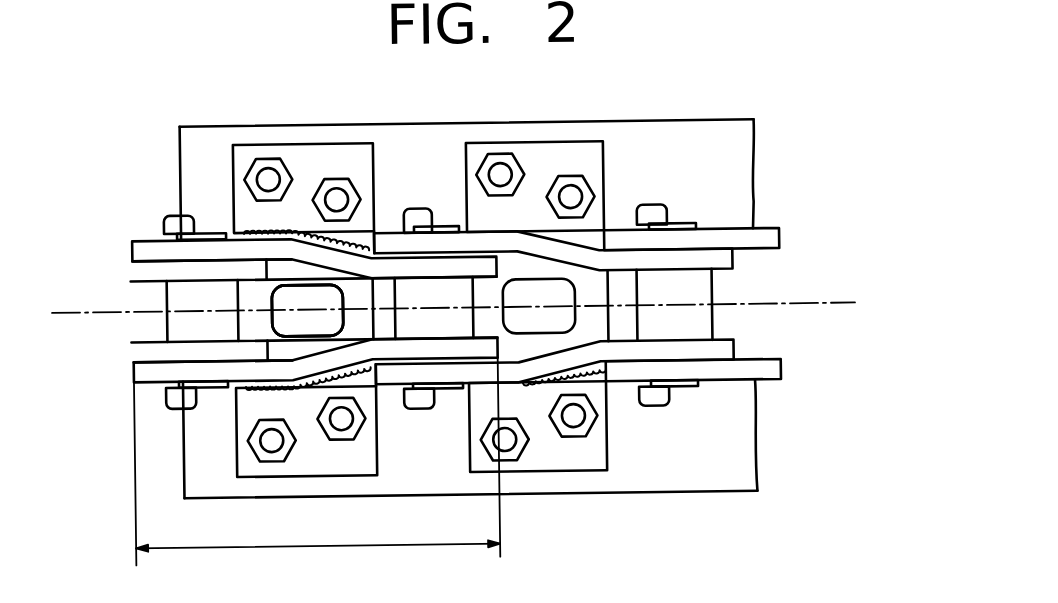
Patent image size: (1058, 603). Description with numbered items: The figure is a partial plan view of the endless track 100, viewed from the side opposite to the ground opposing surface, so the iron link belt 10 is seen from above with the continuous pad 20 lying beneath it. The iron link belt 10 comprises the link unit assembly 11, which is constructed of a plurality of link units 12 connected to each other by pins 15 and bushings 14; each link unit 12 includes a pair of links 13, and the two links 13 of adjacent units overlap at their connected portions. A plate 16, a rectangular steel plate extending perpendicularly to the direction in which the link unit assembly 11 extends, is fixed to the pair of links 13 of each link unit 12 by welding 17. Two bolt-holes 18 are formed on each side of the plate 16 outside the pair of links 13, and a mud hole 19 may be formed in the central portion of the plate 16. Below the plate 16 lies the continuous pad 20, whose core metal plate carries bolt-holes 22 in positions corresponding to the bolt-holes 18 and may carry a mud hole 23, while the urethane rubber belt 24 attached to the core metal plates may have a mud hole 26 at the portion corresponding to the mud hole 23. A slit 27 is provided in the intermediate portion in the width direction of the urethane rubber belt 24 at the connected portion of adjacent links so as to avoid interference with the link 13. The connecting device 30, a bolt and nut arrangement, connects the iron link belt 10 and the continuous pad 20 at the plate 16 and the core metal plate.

The iron link belt 10 is at (133, 374).
The link unit assembly 11 is at (150, 241).
The link unit 12 is at (276, 544).
The link 13 is at (133, 248).
The bushing 14 is at (166, 294).
The pin 15 is at (181, 228).
The plate 16 is at (304, 160).
The welding 17 is at (307, 229).
The bolt-hole 18 is at (340, 196).
The mud hole 19 is at (308, 326).
The continuous pad 20 is at (676, 495).
The bolt-hole 22 is at (340, 196).
The mud hole 23 is at (308, 326).
The urethane rubber belt 24 is at (600, 489).
The mud hole 26 is at (308, 326).
The slit 27 is at (421, 207).
The connecting device 30 is at (268, 151).
The endless track 100 is at (717, 121).